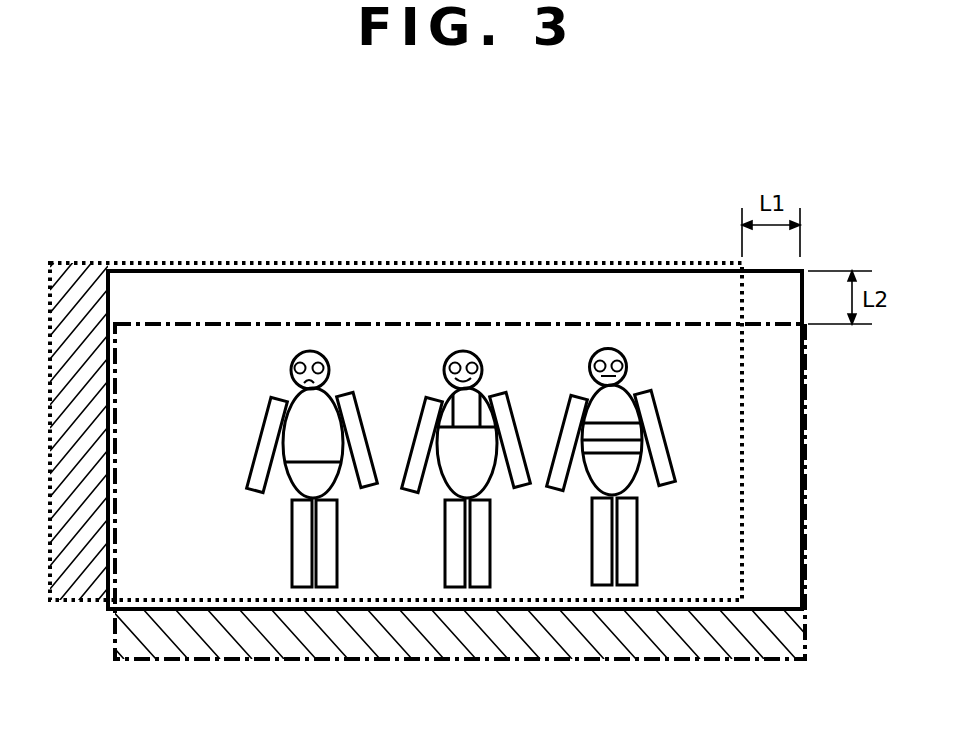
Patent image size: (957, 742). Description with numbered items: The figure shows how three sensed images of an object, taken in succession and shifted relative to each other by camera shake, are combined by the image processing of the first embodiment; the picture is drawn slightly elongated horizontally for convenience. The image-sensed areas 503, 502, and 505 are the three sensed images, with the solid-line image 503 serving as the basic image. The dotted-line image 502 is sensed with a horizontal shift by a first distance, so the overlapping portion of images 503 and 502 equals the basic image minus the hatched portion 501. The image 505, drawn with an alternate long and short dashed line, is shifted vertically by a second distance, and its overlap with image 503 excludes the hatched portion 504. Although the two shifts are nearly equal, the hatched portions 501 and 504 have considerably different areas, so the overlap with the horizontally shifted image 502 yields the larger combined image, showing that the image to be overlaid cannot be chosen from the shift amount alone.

The hatched portion 501 is at (83, 280).
The image-sensed area 502 is at (72, 602).
The image-sensed area 503 is at (190, 610).
The hatched portion 504 is at (332, 642).
The image-sensed area 505 is at (563, 662).